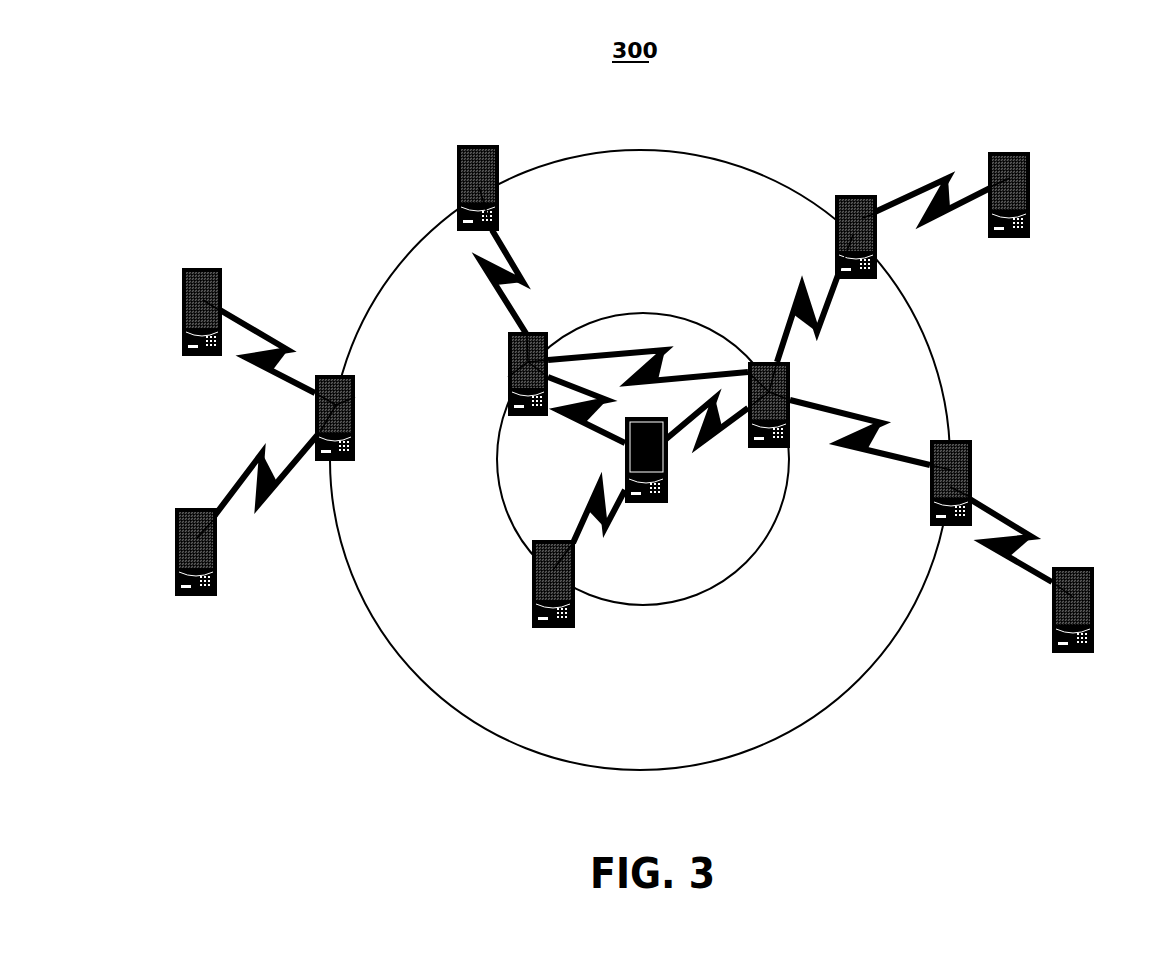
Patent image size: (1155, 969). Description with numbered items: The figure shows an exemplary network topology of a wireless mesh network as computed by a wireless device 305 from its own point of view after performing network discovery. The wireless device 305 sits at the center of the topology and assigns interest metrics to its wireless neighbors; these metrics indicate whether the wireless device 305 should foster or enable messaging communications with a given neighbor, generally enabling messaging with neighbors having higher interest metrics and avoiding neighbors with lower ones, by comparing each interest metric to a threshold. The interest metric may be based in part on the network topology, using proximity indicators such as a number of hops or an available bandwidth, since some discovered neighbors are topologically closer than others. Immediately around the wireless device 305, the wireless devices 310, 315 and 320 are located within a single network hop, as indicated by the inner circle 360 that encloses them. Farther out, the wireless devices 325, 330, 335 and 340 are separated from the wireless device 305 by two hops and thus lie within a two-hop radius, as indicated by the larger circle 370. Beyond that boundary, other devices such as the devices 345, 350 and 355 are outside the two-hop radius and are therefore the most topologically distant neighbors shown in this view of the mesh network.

The wireless device 305 is at (668, 476).
The wireless device 310 is at (790, 428).
The wireless device 315 is at (575, 598).
The wireless device 320 is at (510, 400).
The wireless device 325 is at (483, 143).
The wireless device 330 is at (863, 195).
The wireless device 335 is at (972, 465).
The wireless device 340 is at (355, 442).
The device 345 is at (205, 268).
The device 350 is at (208, 595).
The device 355 is at (998, 152).
The circle 360 is at (751, 556).
The circle 370 is at (390, 272).